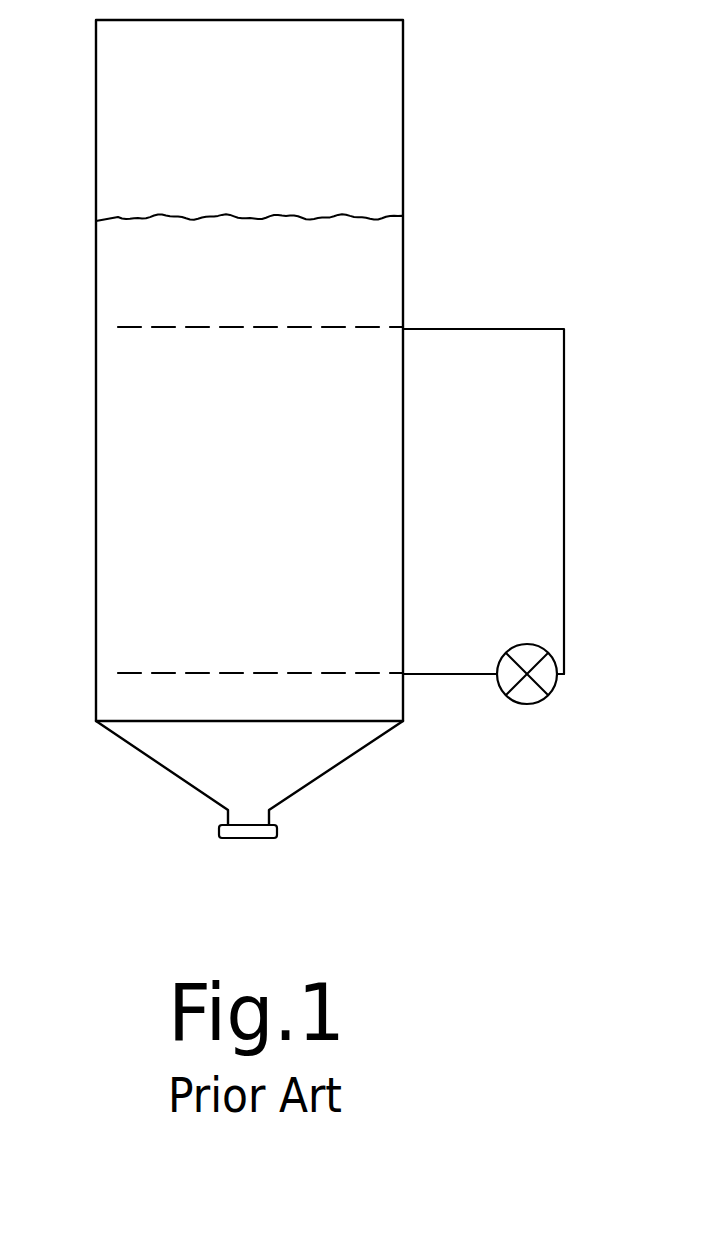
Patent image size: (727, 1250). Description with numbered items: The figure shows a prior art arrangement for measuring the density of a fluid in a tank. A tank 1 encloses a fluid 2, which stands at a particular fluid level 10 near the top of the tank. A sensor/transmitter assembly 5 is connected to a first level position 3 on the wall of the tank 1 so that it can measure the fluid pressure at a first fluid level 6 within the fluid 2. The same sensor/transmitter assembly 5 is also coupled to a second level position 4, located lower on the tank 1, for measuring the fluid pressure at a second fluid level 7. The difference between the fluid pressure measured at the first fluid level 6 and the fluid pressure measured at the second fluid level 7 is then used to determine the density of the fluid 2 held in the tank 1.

The tank 1 is at (405, 60).
The fluid 2 is at (107, 255).
The first level position 3 is at (403, 329).
The second level position 4 is at (405, 675).
The sensor/transmitter assembly 5 is at (557, 679).
The first fluid level 6 is at (118, 327).
The second fluid level 7 is at (108, 673).
The fluid level 10 is at (118, 220).